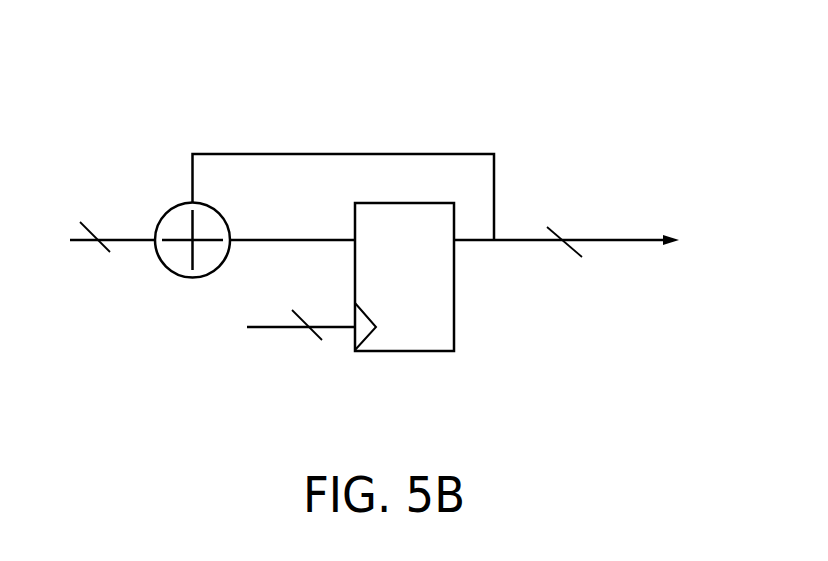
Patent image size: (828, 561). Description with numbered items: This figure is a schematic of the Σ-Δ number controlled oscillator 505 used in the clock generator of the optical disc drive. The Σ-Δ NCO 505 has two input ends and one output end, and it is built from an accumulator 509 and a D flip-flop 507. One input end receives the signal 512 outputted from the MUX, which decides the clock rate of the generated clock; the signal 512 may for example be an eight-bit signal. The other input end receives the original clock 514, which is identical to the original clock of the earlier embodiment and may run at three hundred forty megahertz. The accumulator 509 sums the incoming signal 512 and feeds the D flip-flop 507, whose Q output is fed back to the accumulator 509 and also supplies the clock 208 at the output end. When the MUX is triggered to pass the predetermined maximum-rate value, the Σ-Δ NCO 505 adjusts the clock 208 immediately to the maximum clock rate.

The Σ-Δ number controlled oscillator 505 is at (589, 115).
The signal outputted from the MUX 512 is at (93, 241).
The accumulator 509 is at (197, 280).
The D flip-flop 507 is at (378, 352).
The original clock 514 is at (308, 327).
The clock 208 is at (567, 240).